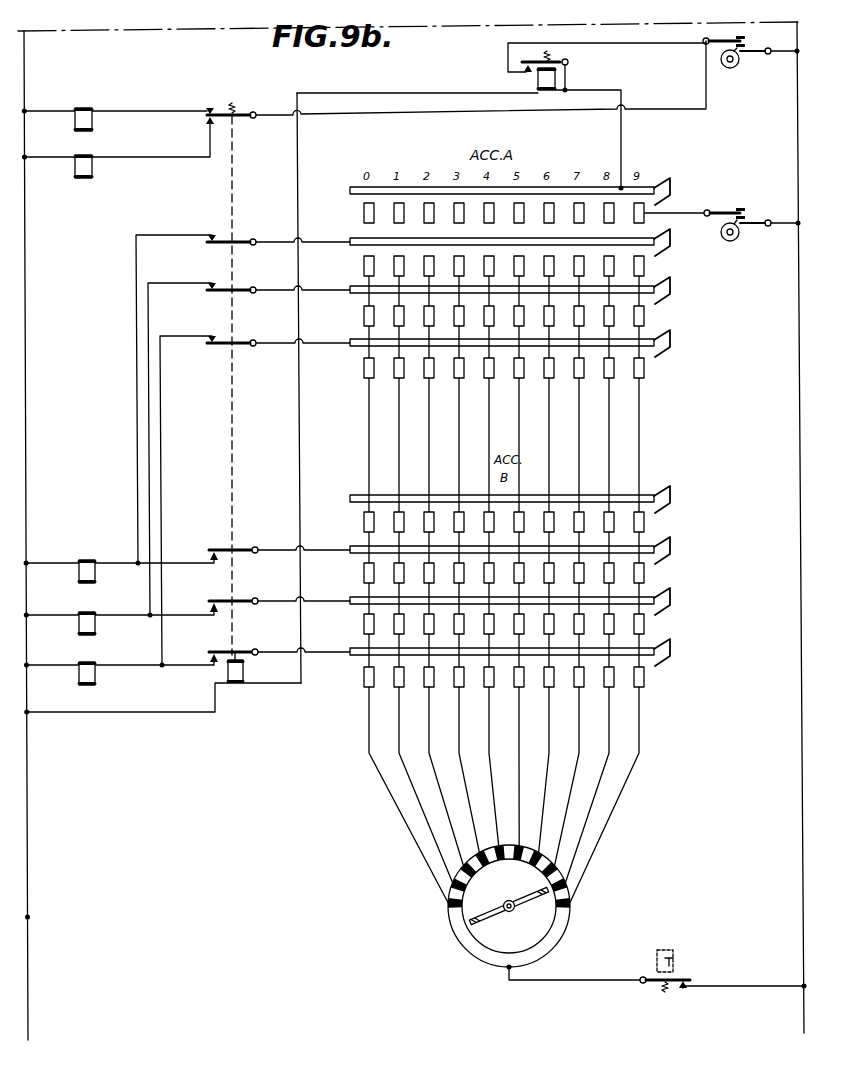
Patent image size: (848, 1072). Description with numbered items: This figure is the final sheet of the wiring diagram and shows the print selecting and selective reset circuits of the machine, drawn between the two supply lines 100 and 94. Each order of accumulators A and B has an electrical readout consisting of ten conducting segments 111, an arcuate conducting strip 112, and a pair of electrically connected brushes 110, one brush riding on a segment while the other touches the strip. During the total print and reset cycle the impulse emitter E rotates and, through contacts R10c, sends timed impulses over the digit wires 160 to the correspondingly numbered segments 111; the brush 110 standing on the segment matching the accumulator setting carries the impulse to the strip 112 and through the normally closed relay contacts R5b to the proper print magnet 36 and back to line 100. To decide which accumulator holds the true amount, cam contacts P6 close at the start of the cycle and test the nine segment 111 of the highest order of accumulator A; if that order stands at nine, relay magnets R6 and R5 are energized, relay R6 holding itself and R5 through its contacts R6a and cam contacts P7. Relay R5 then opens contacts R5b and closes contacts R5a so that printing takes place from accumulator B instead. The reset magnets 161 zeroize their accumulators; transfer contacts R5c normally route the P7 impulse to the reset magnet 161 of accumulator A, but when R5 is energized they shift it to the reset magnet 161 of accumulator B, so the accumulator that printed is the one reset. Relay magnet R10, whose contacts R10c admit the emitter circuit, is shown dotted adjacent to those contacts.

The line 100 is at (28, 917).
The line 94 is at (803, 823).
The reset magnets 161 is at (74, 164).
The print magnets 36 is at (92, 673).
The arcuate conducting strip 112 is at (650, 186).
The conducting segments 111 is at (645, 220).
The brushes 110 is at (672, 187).
The wires 160 is at (492, 783).
The impulse emitter E is at (485, 936).
The relay magnet R5 is at (162, 684).
The relay contacts R5a is at (222, 556).
The relay contacts R5b is at (217, 243).
The relay contacts R5c is at (220, 108).
The relay magnet R6 is at (556, 77).
The relay contacts R6a is at (508, 65).
The cam contacts P6 is at (745, 221).
The cam contacts P7 is at (745, 42).
The relay magnet R10 is at (678, 956).
The relay contacts R10c is at (692, 985).